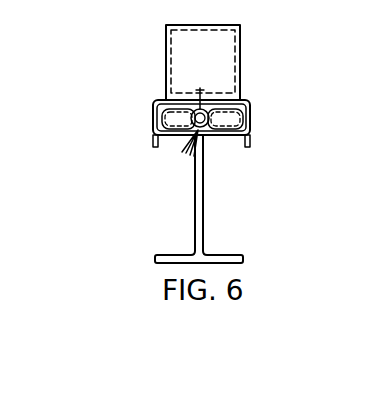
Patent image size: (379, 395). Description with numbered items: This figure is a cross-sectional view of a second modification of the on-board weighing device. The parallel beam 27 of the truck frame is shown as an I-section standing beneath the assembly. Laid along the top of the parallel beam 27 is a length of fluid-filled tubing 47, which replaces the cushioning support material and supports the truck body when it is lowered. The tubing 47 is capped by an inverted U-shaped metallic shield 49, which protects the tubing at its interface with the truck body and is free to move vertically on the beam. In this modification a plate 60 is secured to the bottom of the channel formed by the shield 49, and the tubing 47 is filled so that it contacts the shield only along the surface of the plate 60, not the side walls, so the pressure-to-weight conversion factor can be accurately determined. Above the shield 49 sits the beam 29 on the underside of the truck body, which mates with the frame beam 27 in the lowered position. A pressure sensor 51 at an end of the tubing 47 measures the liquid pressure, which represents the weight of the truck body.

The beam 29 is at (224, 43).
The fluid-filled tubing 47 is at (247, 118).
The inverted U-shaped metallic shield 49 is at (153, 120).
The plate 60 is at (190, 102).
The pressure sensor 51 is at (208, 136).
The parallel beam 27 is at (195, 208).